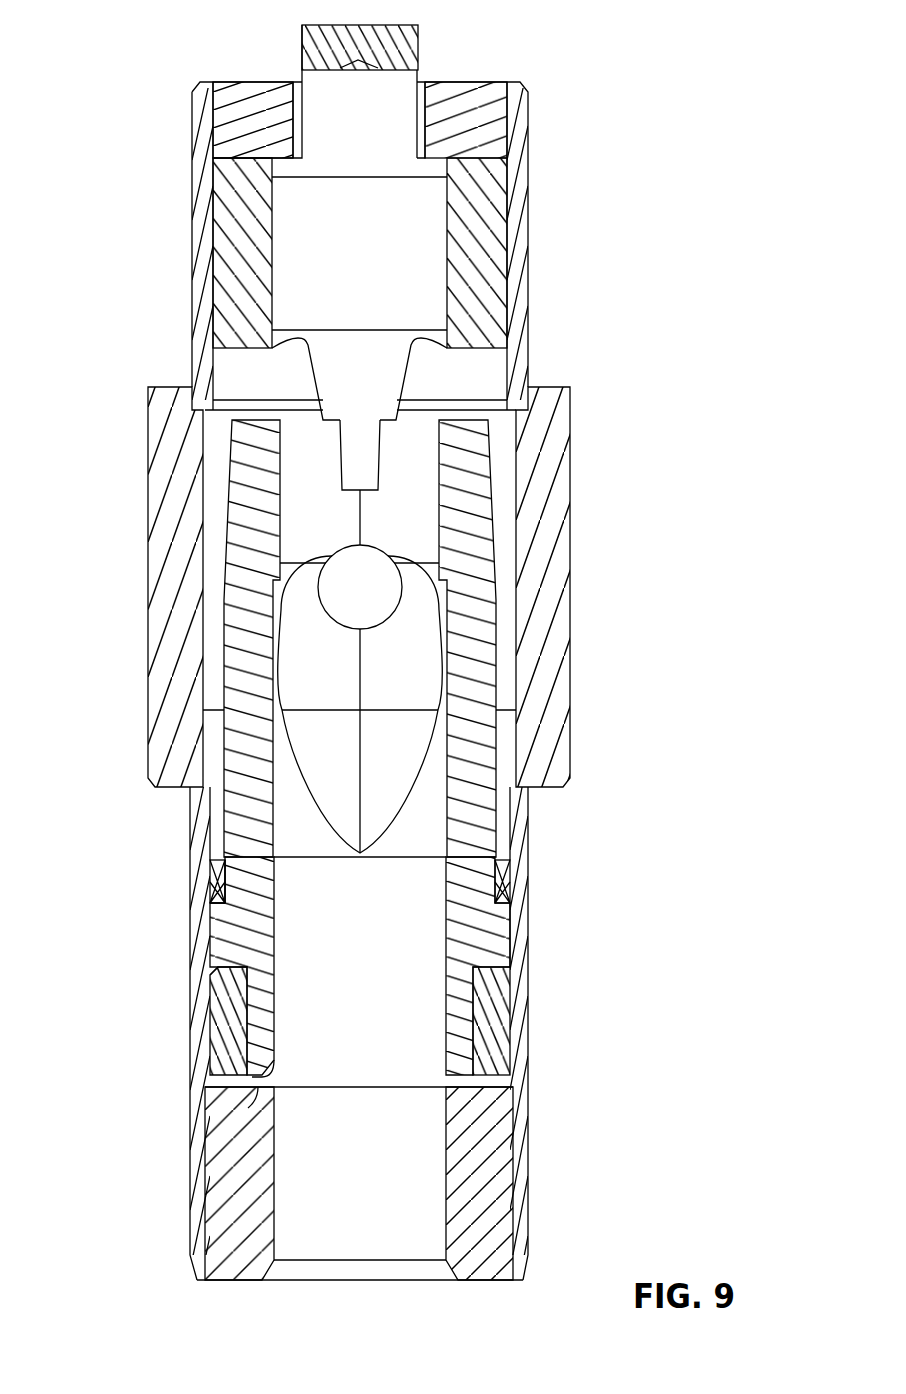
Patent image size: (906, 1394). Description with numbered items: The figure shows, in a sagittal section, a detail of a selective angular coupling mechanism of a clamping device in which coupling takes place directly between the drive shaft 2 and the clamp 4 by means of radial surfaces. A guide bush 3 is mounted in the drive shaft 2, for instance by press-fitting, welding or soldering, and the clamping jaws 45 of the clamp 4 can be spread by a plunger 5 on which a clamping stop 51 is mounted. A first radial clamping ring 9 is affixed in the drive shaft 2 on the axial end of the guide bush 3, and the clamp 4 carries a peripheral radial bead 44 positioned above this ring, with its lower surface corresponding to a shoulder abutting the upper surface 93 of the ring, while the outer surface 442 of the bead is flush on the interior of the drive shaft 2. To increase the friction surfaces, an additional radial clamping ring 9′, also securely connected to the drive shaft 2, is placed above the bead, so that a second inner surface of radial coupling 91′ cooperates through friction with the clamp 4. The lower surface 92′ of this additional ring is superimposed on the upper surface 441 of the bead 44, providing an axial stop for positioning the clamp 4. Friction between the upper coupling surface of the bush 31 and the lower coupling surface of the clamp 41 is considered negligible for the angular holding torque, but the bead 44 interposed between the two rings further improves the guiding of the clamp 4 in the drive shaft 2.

The drive shaft 2 is at (517, 268).
The clamping stop 51 is at (255, 108).
The plunger 5 is at (245, 262).
The clamping jaws 45 is at (278, 500).
The clamp 4 is at (245, 648).
The peripheral radial bead 44 is at (232, 948).
The lower coupling surface of the clamp 41 is at (262, 1072).
The additional radial clamping ring 9′ is at (212, 882).
The second inner surface of radial coupling 91′ is at (242, 880).
The lower surface of the additional radial clamping ring 92′ is at (236, 912).
The upper surface of the peripheral radial bead 441 is at (508, 895).
The outer surface of the bead 442 is at (512, 931).
The radial clamping ring 9 is at (227, 1035).
The upper surface of the radial clamping ring 93 is at (212, 993).
The guide bush 3 is at (245, 1180).
The upper coupling surface of the bush 31 is at (258, 1096).